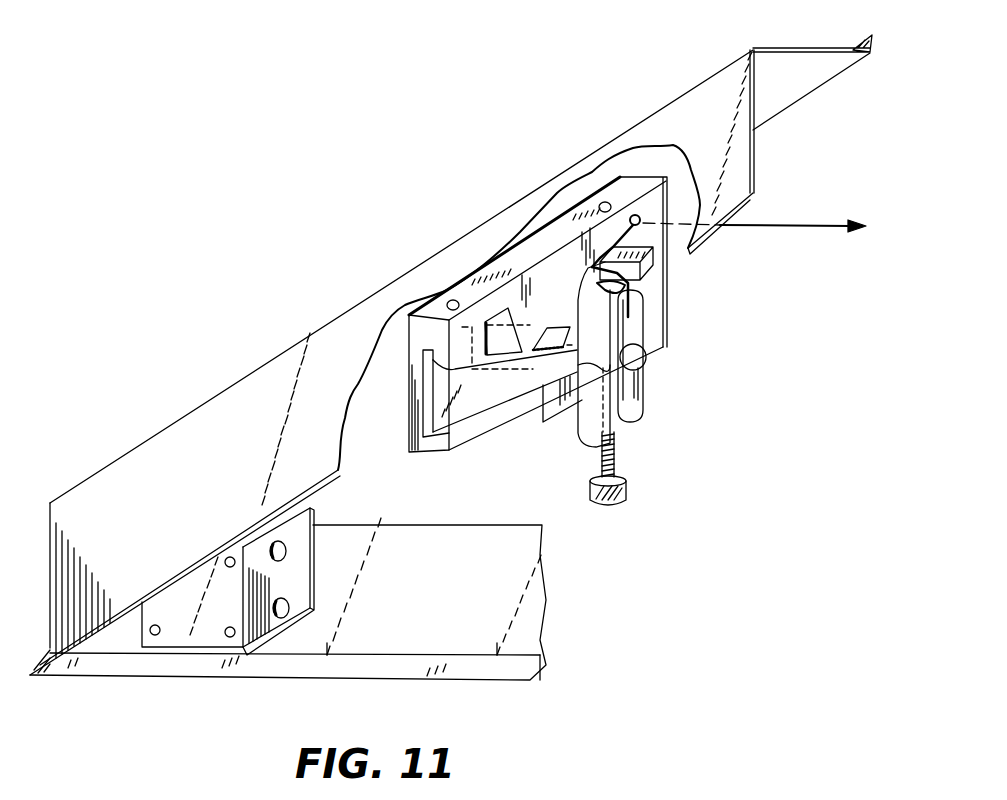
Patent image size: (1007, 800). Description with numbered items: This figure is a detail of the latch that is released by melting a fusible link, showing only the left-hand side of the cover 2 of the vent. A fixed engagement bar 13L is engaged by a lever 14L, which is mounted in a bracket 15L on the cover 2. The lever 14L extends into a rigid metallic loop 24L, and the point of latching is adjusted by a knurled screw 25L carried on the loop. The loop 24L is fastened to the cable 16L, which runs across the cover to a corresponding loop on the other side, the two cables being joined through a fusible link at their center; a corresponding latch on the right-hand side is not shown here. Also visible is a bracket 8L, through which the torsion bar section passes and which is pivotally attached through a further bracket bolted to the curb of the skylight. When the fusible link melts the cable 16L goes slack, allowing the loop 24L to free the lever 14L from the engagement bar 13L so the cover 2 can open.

The cover 2 is at (685, 93).
The bracket 8L is at (300, 553).
The fixed engagement bar 13L is at (478, 327).
The lever 14L is at (512, 387).
The bracket 15L is at (562, 313).
The cable 16L is at (801, 222).
The rigid metallic loop 24L is at (643, 400).
The knurled screw 25L is at (627, 488).